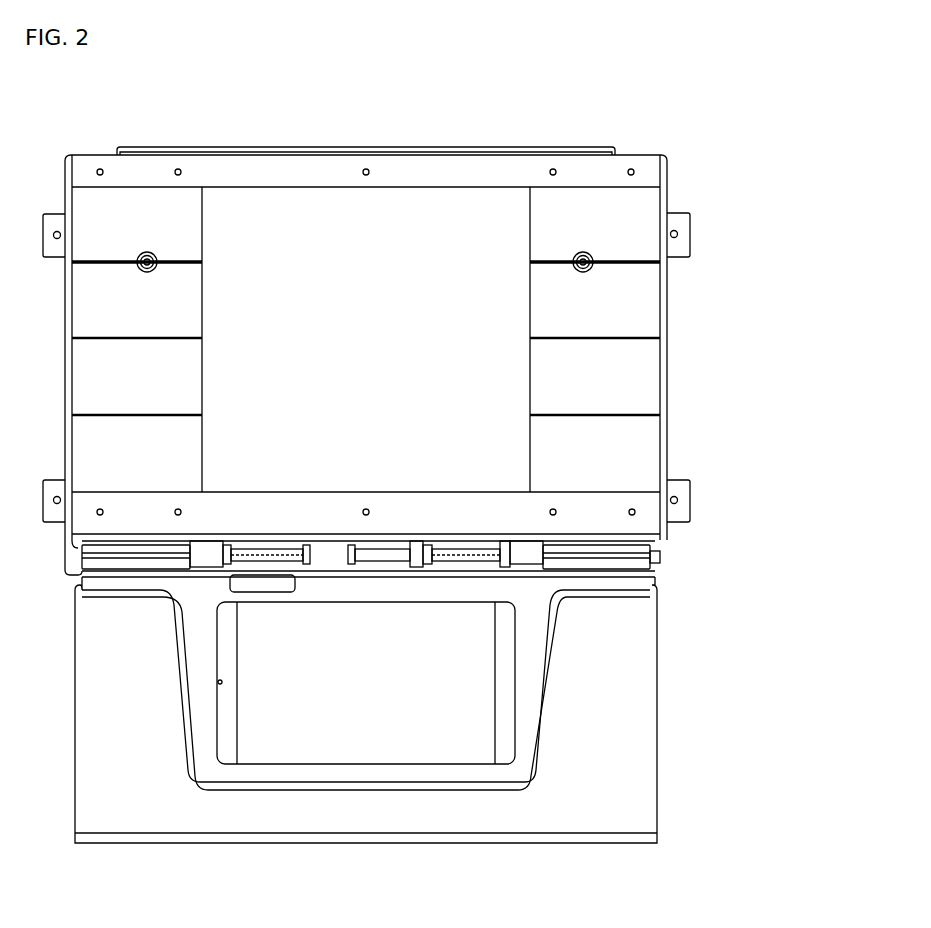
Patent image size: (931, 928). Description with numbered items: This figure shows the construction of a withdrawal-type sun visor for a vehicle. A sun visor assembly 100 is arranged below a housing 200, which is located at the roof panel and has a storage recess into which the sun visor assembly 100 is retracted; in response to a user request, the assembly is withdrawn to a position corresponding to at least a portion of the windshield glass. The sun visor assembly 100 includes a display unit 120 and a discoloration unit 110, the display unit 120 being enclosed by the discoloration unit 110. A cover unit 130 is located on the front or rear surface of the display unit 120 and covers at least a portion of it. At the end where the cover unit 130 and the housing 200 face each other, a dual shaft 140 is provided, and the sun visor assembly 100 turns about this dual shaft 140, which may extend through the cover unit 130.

The sun visor assembly 100 is at (435, 742).
The discoloration unit 110 is at (593, 815).
The display unit 120 is at (365, 732).
The cover unit 130 is at (257, 773).
The dual shaft 140 is at (658, 553).
The housing 200 is at (643, 168).